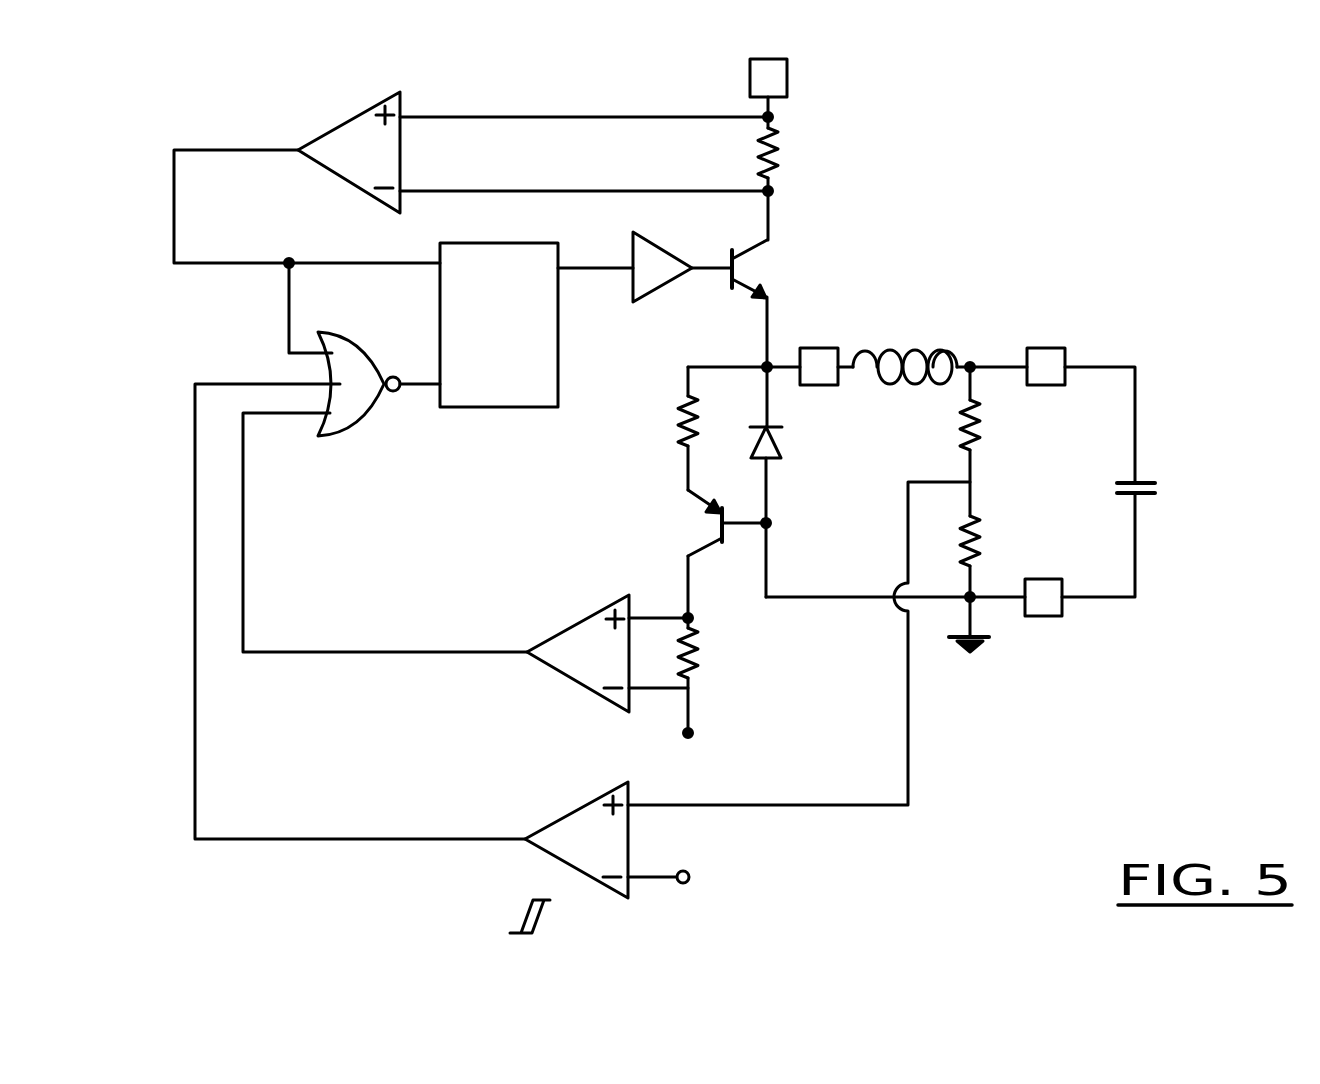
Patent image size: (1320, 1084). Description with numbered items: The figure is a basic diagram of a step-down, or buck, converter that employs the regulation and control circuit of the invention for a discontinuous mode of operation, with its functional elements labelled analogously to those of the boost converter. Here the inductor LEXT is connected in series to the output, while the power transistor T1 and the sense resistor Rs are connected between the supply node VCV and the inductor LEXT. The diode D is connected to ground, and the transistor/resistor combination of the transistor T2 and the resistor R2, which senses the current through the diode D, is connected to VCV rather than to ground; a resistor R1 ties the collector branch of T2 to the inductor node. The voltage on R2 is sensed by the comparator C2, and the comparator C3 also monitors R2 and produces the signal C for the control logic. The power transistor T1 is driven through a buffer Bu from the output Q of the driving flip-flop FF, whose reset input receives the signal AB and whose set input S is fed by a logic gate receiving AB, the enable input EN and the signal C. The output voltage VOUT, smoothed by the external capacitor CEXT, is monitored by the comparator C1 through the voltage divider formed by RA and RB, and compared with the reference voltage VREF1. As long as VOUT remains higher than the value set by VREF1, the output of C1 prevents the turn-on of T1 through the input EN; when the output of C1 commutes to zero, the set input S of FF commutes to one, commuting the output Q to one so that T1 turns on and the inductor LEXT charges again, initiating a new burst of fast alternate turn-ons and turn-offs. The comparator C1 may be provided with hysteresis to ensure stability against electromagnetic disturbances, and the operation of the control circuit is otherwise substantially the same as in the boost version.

The comparator C2 is at (372, 120).
The supply node VCV is at (816, 91).
The sense resistor Rs is at (821, 121).
The driving flip-flop FF is at (499, 325).
The buffer Bu is at (645, 267).
The power transistor T1 is at (795, 236).
The signal AB is at (282, 290).
The enable input EN is at (360, 594).
The signal C is at (385, 532).
The resistor R1 is at (664, 428).
The diode D is at (831, 412).
The sensing transistor T2 is at (684, 488).
The comparator C3 is at (597, 618).
The resistor R2 is at (724, 702).
The inductor LEXT is at (893, 295).
The output voltage VOUT is at (1072, 391).
The voltage divider resistor RA is at (1004, 441).
The voltage divider resistor RB is at (997, 584).
The external capacitor CEXT is at (1181, 490).
The comparator C1 is at (569, 857).
The reference voltage VREF1 is at (686, 905).